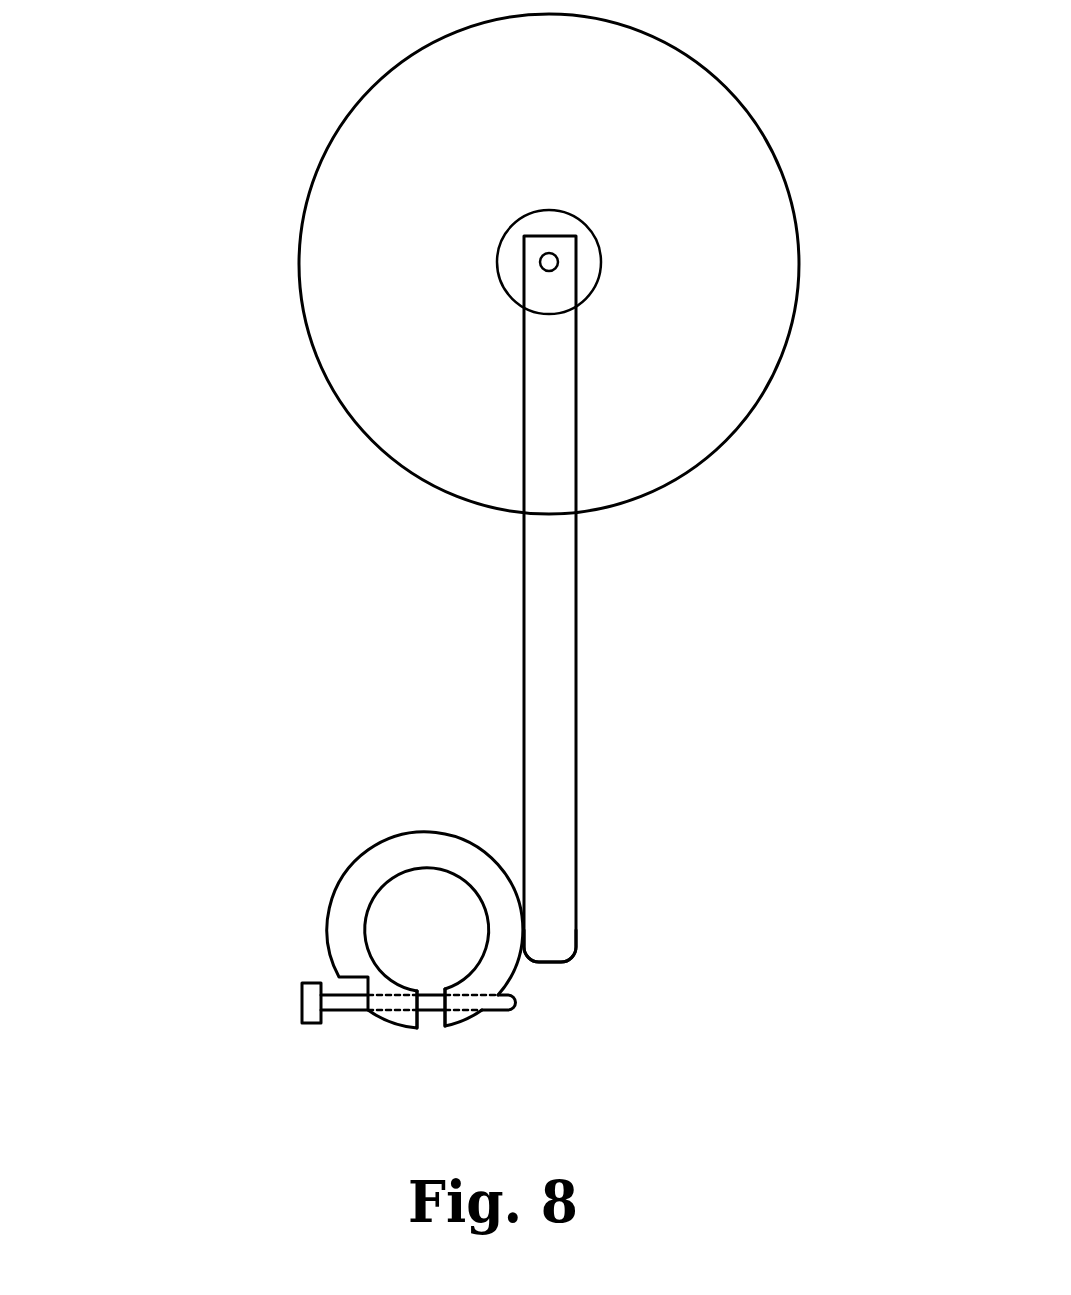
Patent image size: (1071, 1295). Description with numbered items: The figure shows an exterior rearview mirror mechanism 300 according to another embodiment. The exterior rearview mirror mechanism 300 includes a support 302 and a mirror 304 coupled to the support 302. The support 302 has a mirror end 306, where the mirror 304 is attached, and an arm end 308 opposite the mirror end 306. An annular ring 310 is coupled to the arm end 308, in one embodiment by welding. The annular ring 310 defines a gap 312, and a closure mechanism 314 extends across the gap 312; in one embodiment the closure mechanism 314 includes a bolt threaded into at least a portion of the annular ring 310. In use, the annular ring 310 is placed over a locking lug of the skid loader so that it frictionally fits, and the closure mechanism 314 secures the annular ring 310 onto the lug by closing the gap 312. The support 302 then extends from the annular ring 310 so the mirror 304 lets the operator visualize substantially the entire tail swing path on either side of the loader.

The exterior rearview mirror mechanism 300 is at (226, 552).
The support 302 is at (576, 640).
The mirror 304 is at (799, 262).
The mirror end 306 is at (561, 242).
The arm end 308 is at (567, 927).
The annular ring 310 is at (314, 861).
The gap 312 is at (431, 1052).
The closure mechanism 314 is at (302, 1002).